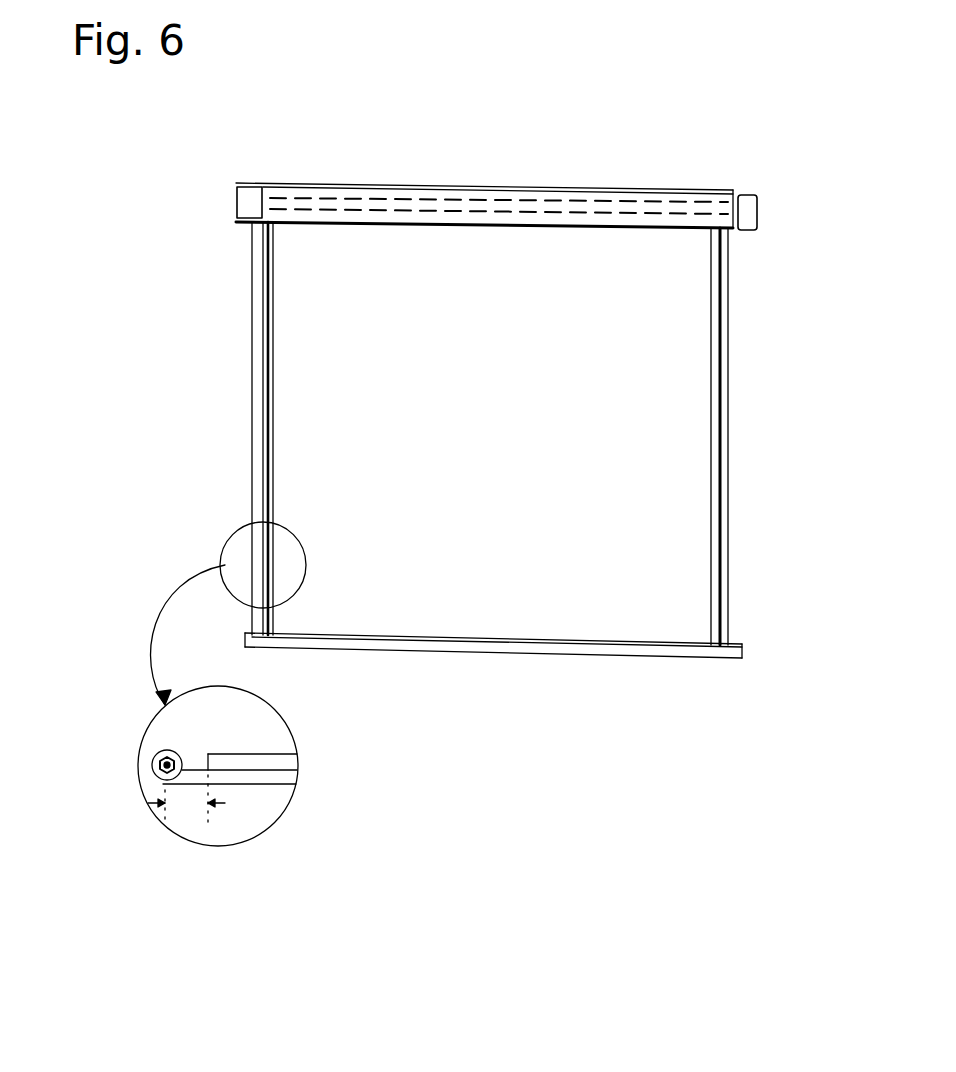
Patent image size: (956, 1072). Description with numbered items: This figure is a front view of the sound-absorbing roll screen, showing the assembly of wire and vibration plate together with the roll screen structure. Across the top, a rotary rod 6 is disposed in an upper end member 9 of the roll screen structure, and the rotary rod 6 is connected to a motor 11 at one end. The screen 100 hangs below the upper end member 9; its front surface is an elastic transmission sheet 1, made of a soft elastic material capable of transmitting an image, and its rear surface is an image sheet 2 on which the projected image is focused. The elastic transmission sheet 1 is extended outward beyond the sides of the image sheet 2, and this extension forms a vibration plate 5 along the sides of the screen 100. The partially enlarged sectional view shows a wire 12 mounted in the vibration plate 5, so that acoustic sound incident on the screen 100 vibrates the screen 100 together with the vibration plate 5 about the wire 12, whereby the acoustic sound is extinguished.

The elastic transmission sheet 1 is at (668, 427).
The image sheet 2 is at (273, 763).
The vibration plate 5 is at (715, 338).
The rotary rod 6 is at (562, 210).
The upper end member 9 is at (242, 205).
The motor 11 is at (758, 210).
The wire 12 is at (272, 457).
The screen 100 is at (532, 593).